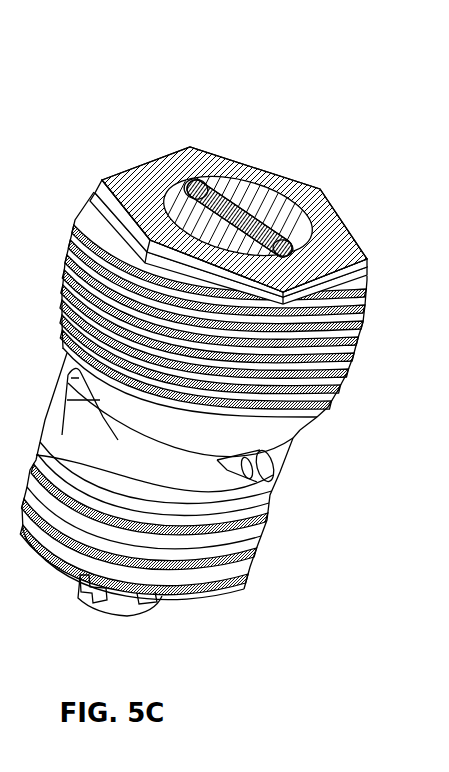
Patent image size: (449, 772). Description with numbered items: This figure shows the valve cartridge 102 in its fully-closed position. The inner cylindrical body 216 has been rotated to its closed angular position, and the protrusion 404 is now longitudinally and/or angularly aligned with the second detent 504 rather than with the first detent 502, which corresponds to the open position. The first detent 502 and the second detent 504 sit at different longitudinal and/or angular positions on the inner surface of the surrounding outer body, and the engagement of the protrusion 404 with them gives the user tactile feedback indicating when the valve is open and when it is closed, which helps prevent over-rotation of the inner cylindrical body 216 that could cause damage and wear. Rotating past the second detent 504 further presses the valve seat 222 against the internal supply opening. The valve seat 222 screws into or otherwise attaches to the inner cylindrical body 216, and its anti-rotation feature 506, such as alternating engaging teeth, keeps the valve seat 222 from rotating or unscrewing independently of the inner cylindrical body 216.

The valve cartridge 102 is at (76, 90).
The protrusion 404 is at (150, 159).
The first detent 502 is at (101, 181).
The inner cylindrical body 216 is at (265, 212).
The second detent 504 is at (268, 250).
The anti-rotation feature 506 is at (88, 593).
The valve seat 222 is at (118, 612).